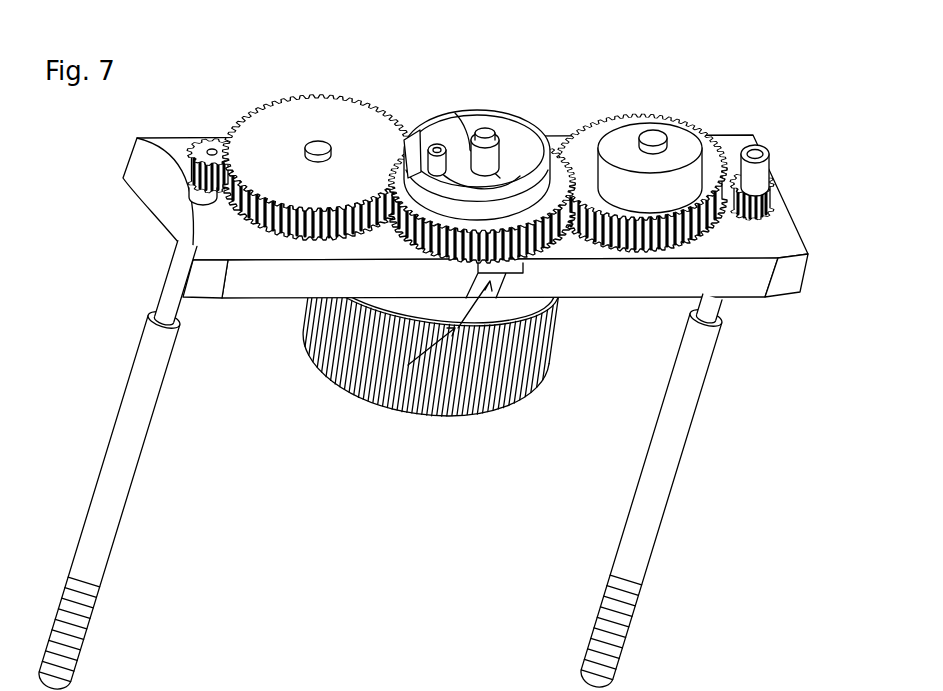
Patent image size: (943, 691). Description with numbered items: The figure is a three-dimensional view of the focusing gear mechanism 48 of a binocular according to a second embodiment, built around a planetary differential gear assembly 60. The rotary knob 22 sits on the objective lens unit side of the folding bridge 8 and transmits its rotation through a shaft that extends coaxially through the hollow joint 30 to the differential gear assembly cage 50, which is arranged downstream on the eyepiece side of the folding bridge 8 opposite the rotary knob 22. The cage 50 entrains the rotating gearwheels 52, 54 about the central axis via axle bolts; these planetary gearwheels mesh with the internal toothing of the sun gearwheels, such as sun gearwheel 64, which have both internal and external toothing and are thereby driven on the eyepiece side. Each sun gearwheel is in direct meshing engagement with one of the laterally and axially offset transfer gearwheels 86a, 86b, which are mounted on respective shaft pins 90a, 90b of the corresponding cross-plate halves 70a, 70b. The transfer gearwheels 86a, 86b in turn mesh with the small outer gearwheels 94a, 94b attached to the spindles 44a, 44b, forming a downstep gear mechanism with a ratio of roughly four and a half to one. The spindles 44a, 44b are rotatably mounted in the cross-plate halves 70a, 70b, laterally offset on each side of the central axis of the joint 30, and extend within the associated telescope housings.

The folding bridge 8 is at (571, 72).
The rotary knob 22 is at (458, 420).
The joint 30 is at (377, 390).
The spindle 44a is at (108, 559).
The spindle 44b is at (651, 559).
The focusing gear mechanism 48 is at (634, 46).
The differential gear assembly cage 50 is at (516, 126).
The rotating gearwheel 52 is at (422, 133).
The rotating gearwheel 54 is at (410, 131).
The differential gear assembly 60 is at (504, 89).
The sun gearwheel 64 is at (549, 222).
The cross-plate half 70a is at (233, 300).
The cross-plate half 70b is at (786, 300).
The transfer gearwheel 86a is at (262, 100).
The transfer gearwheel 86b is at (706, 148).
The shaft pin 90a is at (317, 140).
The shaft pin 90b is at (660, 136).
The outer gearwheel 94a is at (207, 145).
The outer gearwheel 94b is at (770, 186).